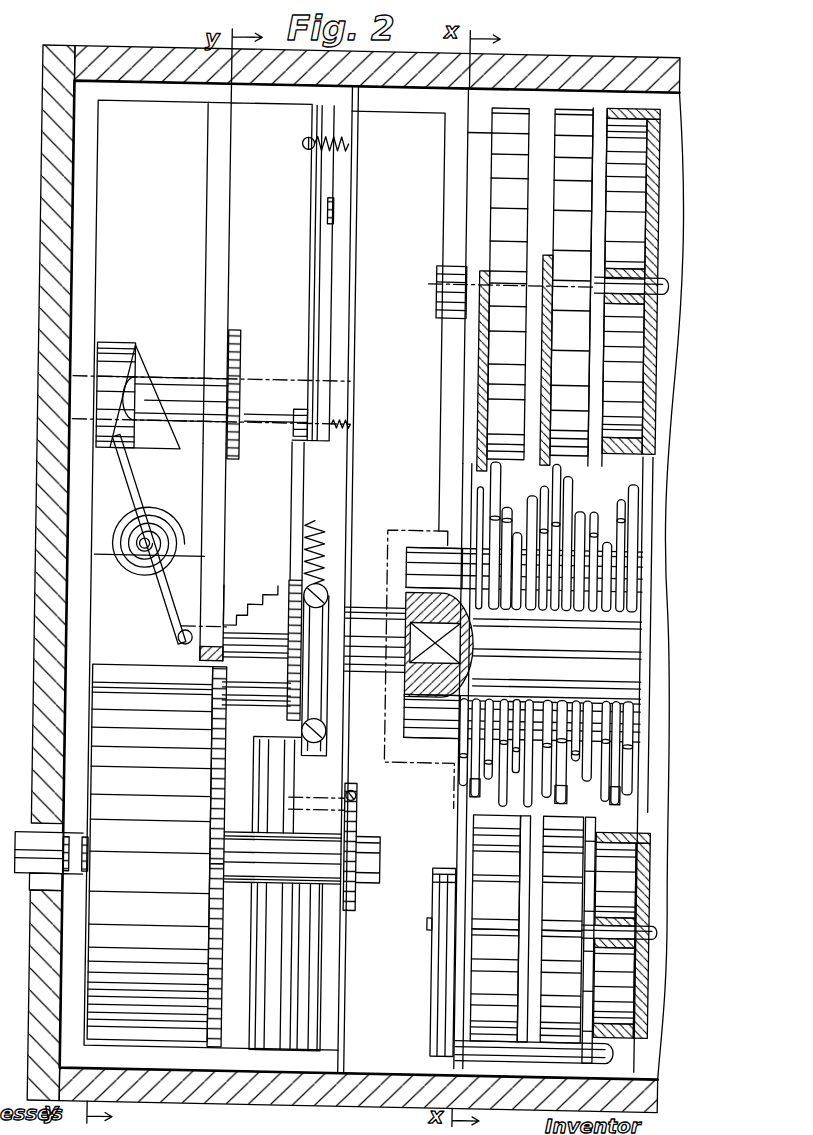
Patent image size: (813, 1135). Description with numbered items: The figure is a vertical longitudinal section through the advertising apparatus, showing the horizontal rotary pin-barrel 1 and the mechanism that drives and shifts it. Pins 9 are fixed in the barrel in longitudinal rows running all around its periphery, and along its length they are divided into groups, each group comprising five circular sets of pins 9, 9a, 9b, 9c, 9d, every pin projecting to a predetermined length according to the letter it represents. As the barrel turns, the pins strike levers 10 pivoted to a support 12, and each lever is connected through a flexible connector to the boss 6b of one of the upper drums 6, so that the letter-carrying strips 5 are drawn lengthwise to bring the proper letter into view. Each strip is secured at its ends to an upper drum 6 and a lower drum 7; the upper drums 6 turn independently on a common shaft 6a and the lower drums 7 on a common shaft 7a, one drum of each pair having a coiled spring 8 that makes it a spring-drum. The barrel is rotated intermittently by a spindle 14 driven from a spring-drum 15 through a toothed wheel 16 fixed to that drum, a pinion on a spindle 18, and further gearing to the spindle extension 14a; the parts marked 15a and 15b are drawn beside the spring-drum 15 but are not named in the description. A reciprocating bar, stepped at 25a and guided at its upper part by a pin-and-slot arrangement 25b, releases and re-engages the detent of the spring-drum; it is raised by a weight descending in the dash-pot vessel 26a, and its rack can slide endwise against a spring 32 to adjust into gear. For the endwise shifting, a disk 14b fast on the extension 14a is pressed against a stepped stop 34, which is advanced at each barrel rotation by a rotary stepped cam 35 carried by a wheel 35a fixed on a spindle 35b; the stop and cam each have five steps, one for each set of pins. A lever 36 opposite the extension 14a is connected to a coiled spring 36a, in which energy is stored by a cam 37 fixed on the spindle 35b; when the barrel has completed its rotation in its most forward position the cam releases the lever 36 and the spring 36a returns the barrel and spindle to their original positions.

The rotary pin-barrel 1 is at (459, 540).
The strips 5 is at (490, 788).
The upper drums 6 is at (573, 284).
The upper drum shaft 6a is at (439, 276).
The boss of upper drum 6b is at (633, 263).
The lower drums 7 is at (560, 942).
The lower drum shaft 7a is at (443, 912).
The coiled spring 8 is at (478, 912).
The pins 9 is at (483, 580).
The second set of pins 9a is at (494, 606).
The third set of pins 9b is at (519, 610).
The fourth set of pins 9c is at (559, 608).
The fifth set of pins 9d is at (585, 607).
The levers 10 is at (468, 345).
The support 12 is at (482, 410).
The spindle 14 is at (375, 639).
The spindle extension 14a is at (296, 620).
The disk 14b is at (508, 662).
The spring-drum 15 is at (157, 853).
The screw 15a is at (366, 802).
The collar 15b is at (369, 891).
The toothed wheel 16 is at (233, 943).
The spindle 18 is at (277, 692).
The step of reciprocating bar 25a is at (312, 430).
The pin-and-slot arrangement 25b is at (298, 428).
The vessel 26a is at (302, 934).
The spring 32 is at (334, 552).
The stepped stop 34 is at (236, 512).
The rotary stepped cam 35 is at (246, 354).
The wheel 35a is at (329, 207).
The spindle 35b is at (175, 387).
The lever 36 is at (176, 605).
The coiled spring 36a is at (190, 492).
The cam 37 is at (120, 351).